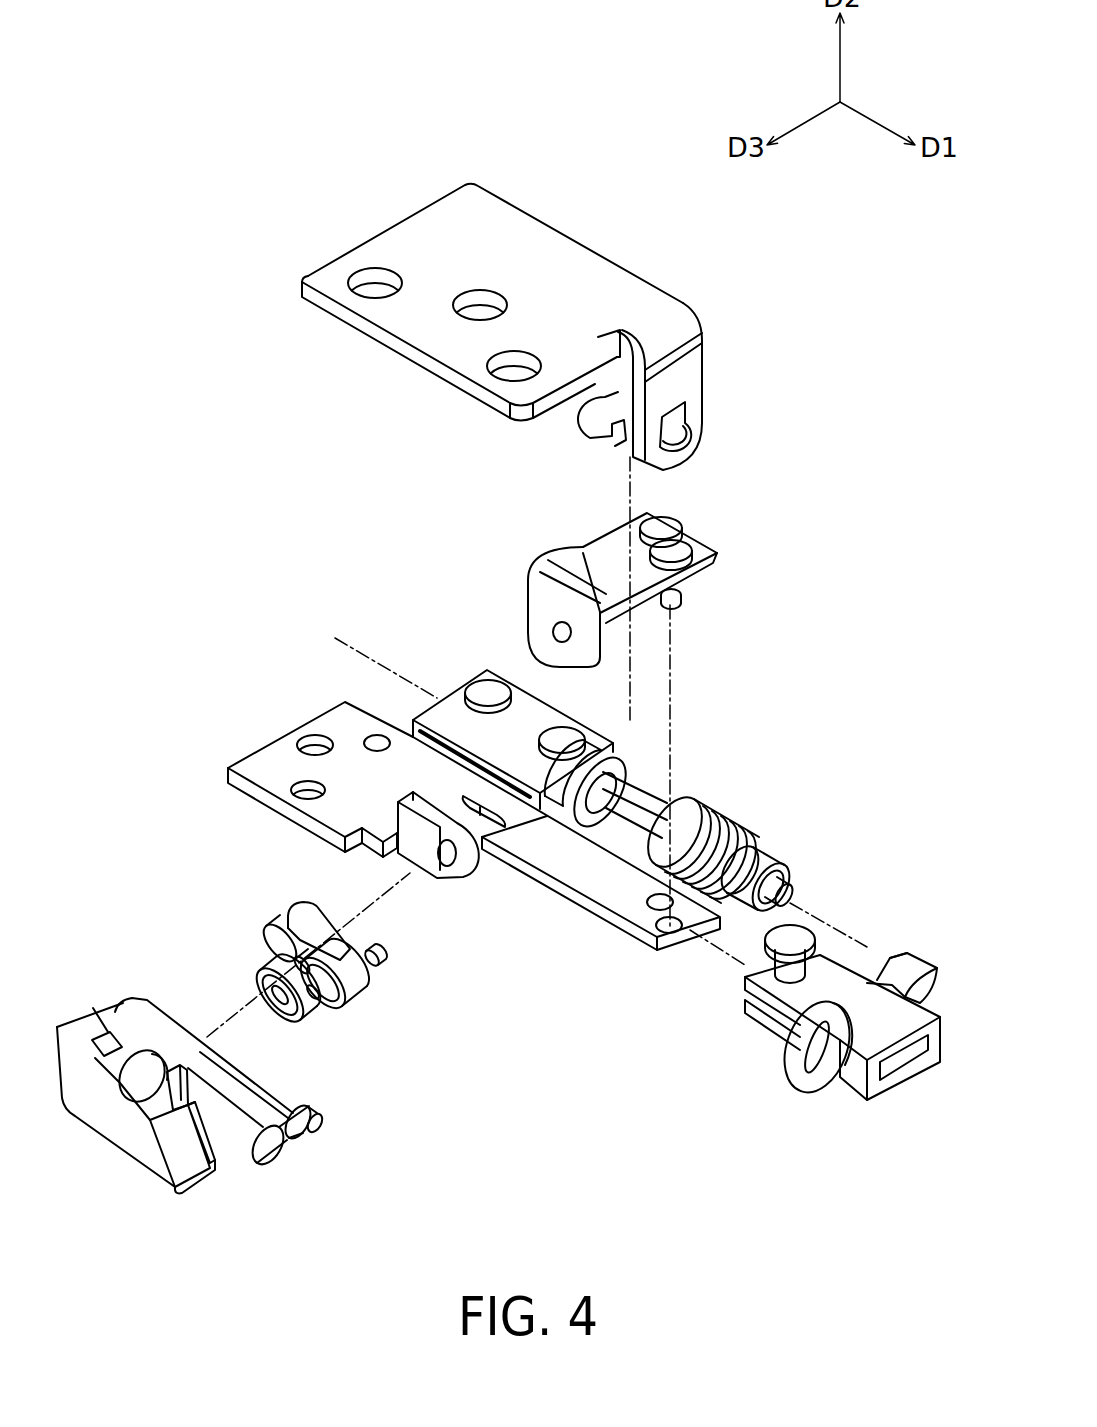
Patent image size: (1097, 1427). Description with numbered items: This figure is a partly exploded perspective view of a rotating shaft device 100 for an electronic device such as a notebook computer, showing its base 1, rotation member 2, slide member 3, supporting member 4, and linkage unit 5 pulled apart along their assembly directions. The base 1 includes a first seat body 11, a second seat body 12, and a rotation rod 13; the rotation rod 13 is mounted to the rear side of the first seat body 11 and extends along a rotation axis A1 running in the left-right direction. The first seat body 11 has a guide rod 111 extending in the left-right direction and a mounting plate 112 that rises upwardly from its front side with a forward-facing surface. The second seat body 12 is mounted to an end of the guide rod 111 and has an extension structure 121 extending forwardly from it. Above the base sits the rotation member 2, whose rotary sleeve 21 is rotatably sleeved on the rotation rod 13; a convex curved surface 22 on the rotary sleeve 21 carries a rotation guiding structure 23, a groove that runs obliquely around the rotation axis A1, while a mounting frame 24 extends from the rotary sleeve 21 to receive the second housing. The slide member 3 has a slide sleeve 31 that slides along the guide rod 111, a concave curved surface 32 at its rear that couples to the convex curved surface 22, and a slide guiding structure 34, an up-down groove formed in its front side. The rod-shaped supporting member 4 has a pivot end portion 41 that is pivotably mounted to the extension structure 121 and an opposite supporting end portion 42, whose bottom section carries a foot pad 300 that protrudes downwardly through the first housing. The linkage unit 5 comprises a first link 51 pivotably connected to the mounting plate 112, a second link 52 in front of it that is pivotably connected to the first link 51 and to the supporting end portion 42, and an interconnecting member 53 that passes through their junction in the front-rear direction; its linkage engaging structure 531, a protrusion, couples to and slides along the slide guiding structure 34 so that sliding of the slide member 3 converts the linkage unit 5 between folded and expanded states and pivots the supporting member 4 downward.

The rotating shaft device 100 is at (688, 23).
The base 1 is at (492, 835).
The first seat body 11 is at (268, 765).
The guide rod 111 is at (623, 922).
The mounting plate 112 is at (428, 810).
The second seat body 12 is at (651, 590).
The extension structure 121 is at (575, 553).
The rotation rod 13 is at (643, 797).
The rotation member 2 is at (549, 421).
The rotary sleeve 21 is at (652, 412).
The convex curved surface 22 is at (590, 417).
The rotation guiding structure 23 is at (617, 440).
The mounting frame 24 is at (492, 220).
The slide member 3 is at (859, 1057).
The slide sleeve 31 is at (903, 1082).
The concave curved surface 32 is at (930, 990).
The slide guiding structure 34 is at (807, 1070).
The supporting member 4 is at (236, 1096).
The pivot end portion 41 is at (290, 1160).
The supporting end portion 42 is at (122, 1047).
The linkage unit 5 is at (347, 967).
The first link 51 is at (333, 947).
The second link 52 is at (353, 990).
The interconnecting member 53 is at (389, 968).
The linkage engaging structure 531 is at (373, 960).
The foot pad 300 is at (118, 1138).
The rotation axis A1 is at (607, 792).